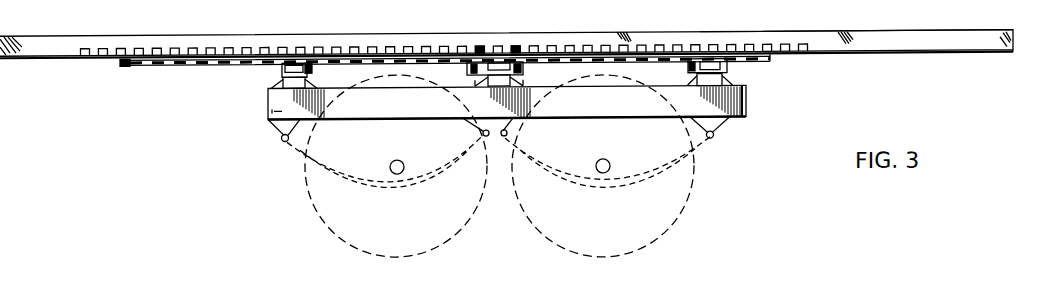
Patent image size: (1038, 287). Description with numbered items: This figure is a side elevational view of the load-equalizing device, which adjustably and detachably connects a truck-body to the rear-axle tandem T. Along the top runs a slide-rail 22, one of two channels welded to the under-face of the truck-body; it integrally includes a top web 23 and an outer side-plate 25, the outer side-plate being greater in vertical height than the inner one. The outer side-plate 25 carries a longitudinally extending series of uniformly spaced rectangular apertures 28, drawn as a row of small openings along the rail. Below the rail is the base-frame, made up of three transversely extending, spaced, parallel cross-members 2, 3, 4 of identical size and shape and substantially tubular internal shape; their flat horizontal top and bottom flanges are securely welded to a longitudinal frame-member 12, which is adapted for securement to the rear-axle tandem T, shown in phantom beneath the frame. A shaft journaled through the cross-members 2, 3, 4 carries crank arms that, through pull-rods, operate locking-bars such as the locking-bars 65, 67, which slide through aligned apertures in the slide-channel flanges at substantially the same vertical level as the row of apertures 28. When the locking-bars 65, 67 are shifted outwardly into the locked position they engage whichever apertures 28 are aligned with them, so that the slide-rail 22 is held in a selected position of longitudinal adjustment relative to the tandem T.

The slide-rail 22 is at (957, 35).
The top web 23 is at (818, 34).
The outer side-plate 25 is at (887, 35).
The rectangular apertures 28 is at (223, 48).
The center cross-member 3 is at (492, 44).
The cross-member 2 is at (278, 77).
The cross-member 4 is at (710, 83).
The locking-bar 65 is at (478, 45).
The locking-bar 67 is at (520, 47).
The longitudinal frame-member 12 is at (746, 91).
The rear-axle tandem T is at (722, 134).